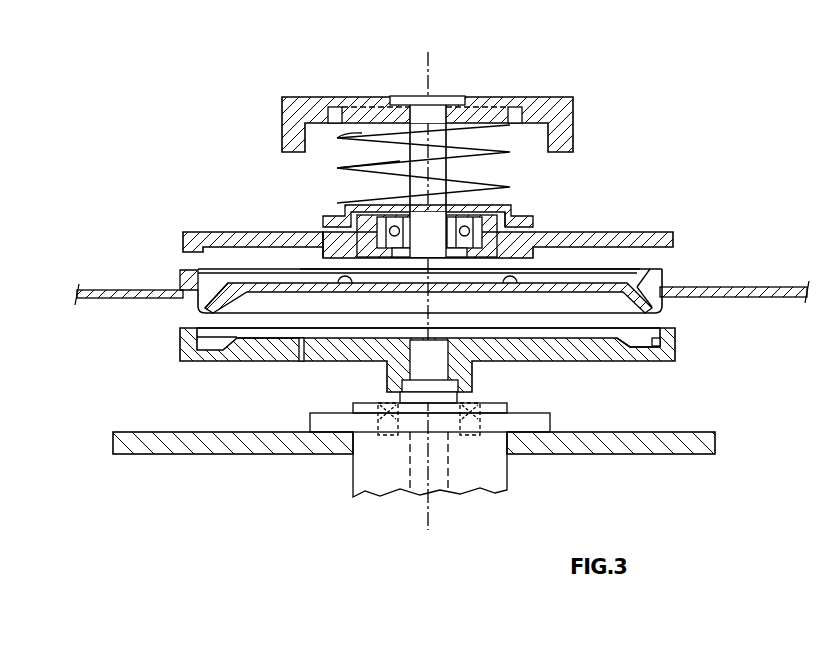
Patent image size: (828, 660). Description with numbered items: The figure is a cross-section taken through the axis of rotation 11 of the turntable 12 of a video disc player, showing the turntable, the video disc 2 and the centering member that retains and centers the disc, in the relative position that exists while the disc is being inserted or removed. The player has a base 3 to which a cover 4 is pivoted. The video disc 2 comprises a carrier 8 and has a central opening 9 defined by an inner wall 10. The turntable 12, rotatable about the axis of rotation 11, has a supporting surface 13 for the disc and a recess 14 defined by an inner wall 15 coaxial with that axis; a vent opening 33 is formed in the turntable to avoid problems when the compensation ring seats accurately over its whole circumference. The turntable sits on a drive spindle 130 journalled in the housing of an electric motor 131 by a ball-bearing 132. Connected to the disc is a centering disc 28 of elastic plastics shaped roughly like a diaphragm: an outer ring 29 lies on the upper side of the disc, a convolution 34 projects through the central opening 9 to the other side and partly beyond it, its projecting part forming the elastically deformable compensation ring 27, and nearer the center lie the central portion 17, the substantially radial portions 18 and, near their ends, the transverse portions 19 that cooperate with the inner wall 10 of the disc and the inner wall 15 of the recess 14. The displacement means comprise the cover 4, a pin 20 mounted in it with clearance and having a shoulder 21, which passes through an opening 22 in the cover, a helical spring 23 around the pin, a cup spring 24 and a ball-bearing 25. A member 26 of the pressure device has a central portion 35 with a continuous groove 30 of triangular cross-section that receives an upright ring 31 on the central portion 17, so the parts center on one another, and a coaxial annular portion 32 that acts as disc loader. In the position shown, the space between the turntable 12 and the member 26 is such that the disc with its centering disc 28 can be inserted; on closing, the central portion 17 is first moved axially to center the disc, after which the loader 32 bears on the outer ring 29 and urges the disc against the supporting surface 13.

The video disc 2 is at (794, 281).
The base 3 is at (626, 446).
The cover 4 is at (545, 104).
The carrier 8 is at (768, 287).
The central opening 9 is at (640, 268).
The inner wall 10 is at (190, 292).
The axis of rotation 11 is at (446, 513).
The turntable 12 is at (622, 353).
The supporting surface 13 is at (183, 318).
The recess 14 is at (640, 335).
The inner wall 15 is at (661, 343).
The central portion 17 is at (482, 289).
The portions 18 is at (284, 294).
The transverse portions 19 is at (208, 288).
The pin 20 is at (452, 164).
The shoulder 21 is at (450, 104).
The opening 22 is at (358, 135).
The helical spring 23 is at (364, 178).
The cup spring 24 is at (518, 239).
The ball-bearing 25 is at (478, 207).
The member 26 is at (582, 237).
The elastically deformable compensation ring 27 is at (194, 303).
The centering disc 28 is at (606, 266).
The outer ring 29 is at (667, 274).
The groove 30 is at (343, 258).
The upright ring 31 is at (349, 286).
The annular portion 32 is at (194, 241).
The vent opening 33 is at (301, 342).
The convolution 34 is at (214, 298).
The central portion 35 is at (545, 222).
The drive spindle 130 is at (419, 367).
The electric motor 131 is at (373, 468).
The ball-bearing 132 is at (472, 418).